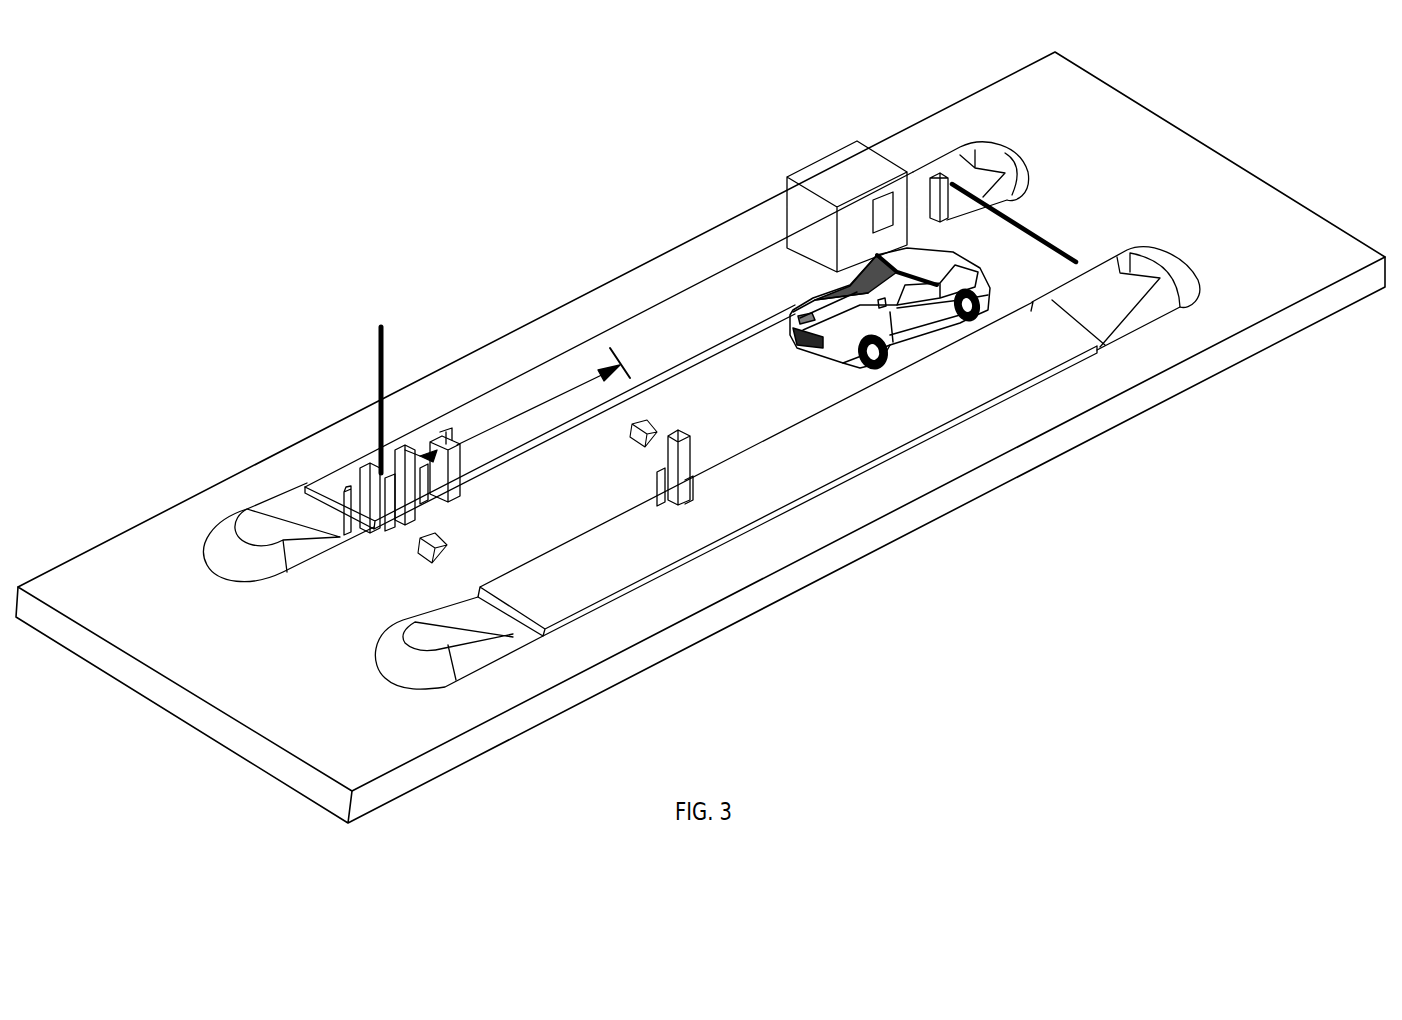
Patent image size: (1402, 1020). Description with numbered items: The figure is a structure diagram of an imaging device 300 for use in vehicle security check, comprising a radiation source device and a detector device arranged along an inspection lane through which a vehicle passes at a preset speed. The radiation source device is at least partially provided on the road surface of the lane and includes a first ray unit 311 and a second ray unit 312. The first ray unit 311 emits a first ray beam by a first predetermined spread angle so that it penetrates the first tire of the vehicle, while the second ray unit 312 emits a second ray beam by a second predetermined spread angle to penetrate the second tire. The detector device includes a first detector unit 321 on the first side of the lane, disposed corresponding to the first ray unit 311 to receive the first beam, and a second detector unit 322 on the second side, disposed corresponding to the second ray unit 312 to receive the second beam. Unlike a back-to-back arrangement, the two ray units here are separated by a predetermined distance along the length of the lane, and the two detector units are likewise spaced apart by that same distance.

The imaging device 300 is at (117, 156).
The first ray unit 311 is at (440, 543).
The second ray unit 312 is at (645, 432).
The first detector unit 321 is at (400, 452).
The second detector unit 322 is at (688, 448).